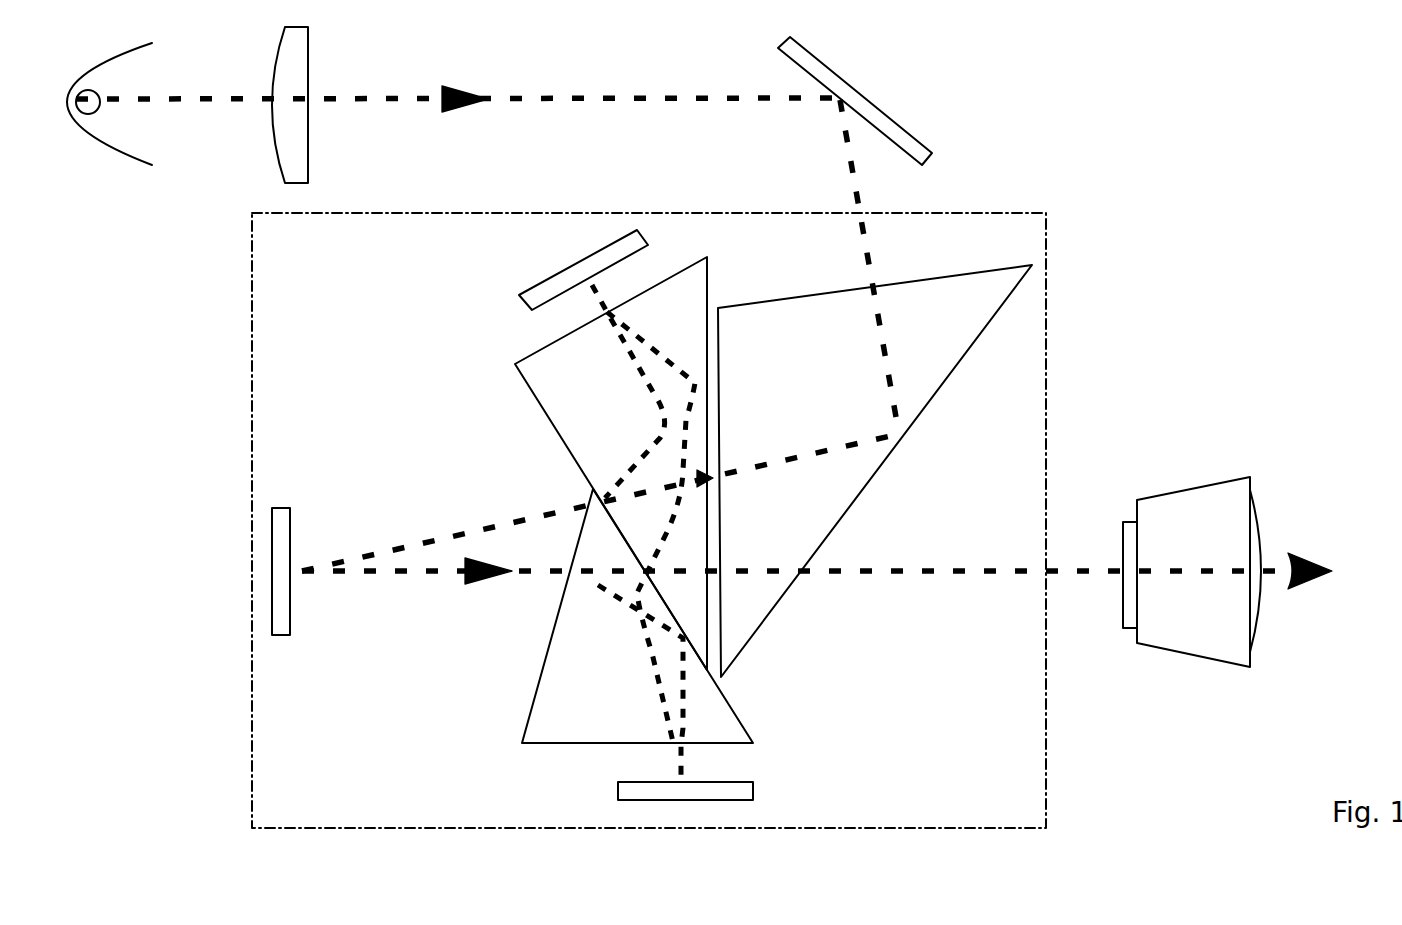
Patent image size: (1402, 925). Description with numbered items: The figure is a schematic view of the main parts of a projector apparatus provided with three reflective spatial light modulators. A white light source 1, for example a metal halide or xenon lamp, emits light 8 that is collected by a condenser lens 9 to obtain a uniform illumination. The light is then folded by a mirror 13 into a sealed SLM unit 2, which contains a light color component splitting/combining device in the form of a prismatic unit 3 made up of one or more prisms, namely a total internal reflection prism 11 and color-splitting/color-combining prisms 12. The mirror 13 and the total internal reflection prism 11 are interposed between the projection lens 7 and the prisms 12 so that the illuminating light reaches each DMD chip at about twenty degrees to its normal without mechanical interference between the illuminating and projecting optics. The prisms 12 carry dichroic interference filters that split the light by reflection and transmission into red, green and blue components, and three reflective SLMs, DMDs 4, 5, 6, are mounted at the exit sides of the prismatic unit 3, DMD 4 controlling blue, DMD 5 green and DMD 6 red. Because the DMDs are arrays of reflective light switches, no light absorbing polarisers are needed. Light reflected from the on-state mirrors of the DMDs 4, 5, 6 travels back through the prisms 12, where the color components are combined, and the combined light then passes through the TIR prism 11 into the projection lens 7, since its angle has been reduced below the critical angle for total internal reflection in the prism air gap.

The white light source 1 is at (95, 148).
The sealed SLM unit 2 is at (1047, 298).
The prismatic unit 3 is at (694, 518).
The DMD 4 is at (545, 290).
The DMD 5 is at (280, 518).
The DMD 6 is at (740, 792).
The projection lens 7 is at (1180, 513).
The light 8 is at (178, 102).
The condenser lens 9 is at (295, 75).
The total internal reflection prism 11 is at (833, 487).
The color-splitting/color-combining prisms 12 is at (567, 405).
The mirror 13 is at (827, 77).